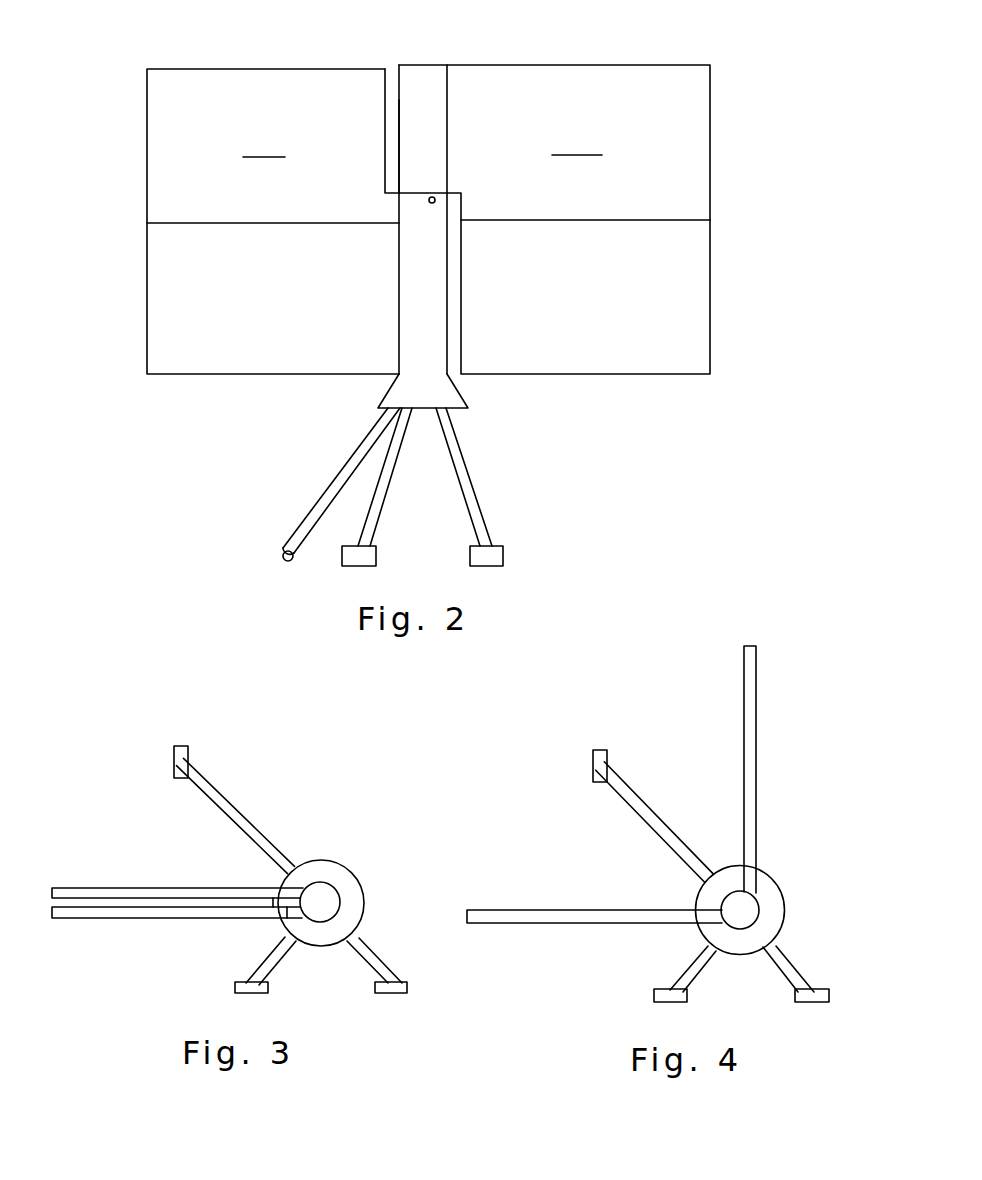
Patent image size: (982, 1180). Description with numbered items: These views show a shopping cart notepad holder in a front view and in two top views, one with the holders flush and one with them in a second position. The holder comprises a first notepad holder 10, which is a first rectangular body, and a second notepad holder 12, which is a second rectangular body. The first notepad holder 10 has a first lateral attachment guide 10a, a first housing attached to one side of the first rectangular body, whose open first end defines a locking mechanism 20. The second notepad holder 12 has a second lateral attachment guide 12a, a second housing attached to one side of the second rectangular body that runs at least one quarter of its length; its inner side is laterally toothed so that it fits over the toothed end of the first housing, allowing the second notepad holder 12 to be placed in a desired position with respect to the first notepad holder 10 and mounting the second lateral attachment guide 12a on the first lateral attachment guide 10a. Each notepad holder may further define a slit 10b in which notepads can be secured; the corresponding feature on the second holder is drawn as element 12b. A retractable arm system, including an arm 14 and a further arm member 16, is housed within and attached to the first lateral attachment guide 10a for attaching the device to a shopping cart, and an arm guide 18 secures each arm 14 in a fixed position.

In FIG. 2, the first notepad holder 10 is at (273, 221).
In FIG. 3, the first notepad holder 10 is at (116, 913).
In FIG. 4, the first notepad holder 10 is at (591, 921).
In FIG. 2, the first lateral attachment guide 10a is at (195, 229).
In FIG. 2, the slit 10b is at (422, 336).
In FIG. 2, the second notepad holder 12 is at (554, 219).
In FIG. 3, the second notepad holder 12 is at (150, 889).
In FIG. 4, the second notepad holder 12 is at (746, 702).
In FIG. 2, the second lateral attachment guide 12a is at (662, 213).
In FIG. 2, the tab portion of second panel 12b is at (425, 97).
In FIG. 2, the arm 14 is at (462, 477).
In FIG. 3, the arm 14 is at (262, 831).
In FIG. 4, the arm 14 is at (654, 822).
In FIG. 2, the retractable arm system component 16 is at (275, 552).
In FIG. 3, the retractable arm system component 16 is at (177, 738).
In FIG. 4, the retractable arm system component 16 is at (601, 743).
In FIG. 2, the arm guide 18 is at (450, 402).
In FIG. 3, the arm guide 18 is at (358, 885).
In FIG. 4, the arm guide 18 is at (775, 907).
In FIG. 2, the locking mechanism 20 is at (428, 212).